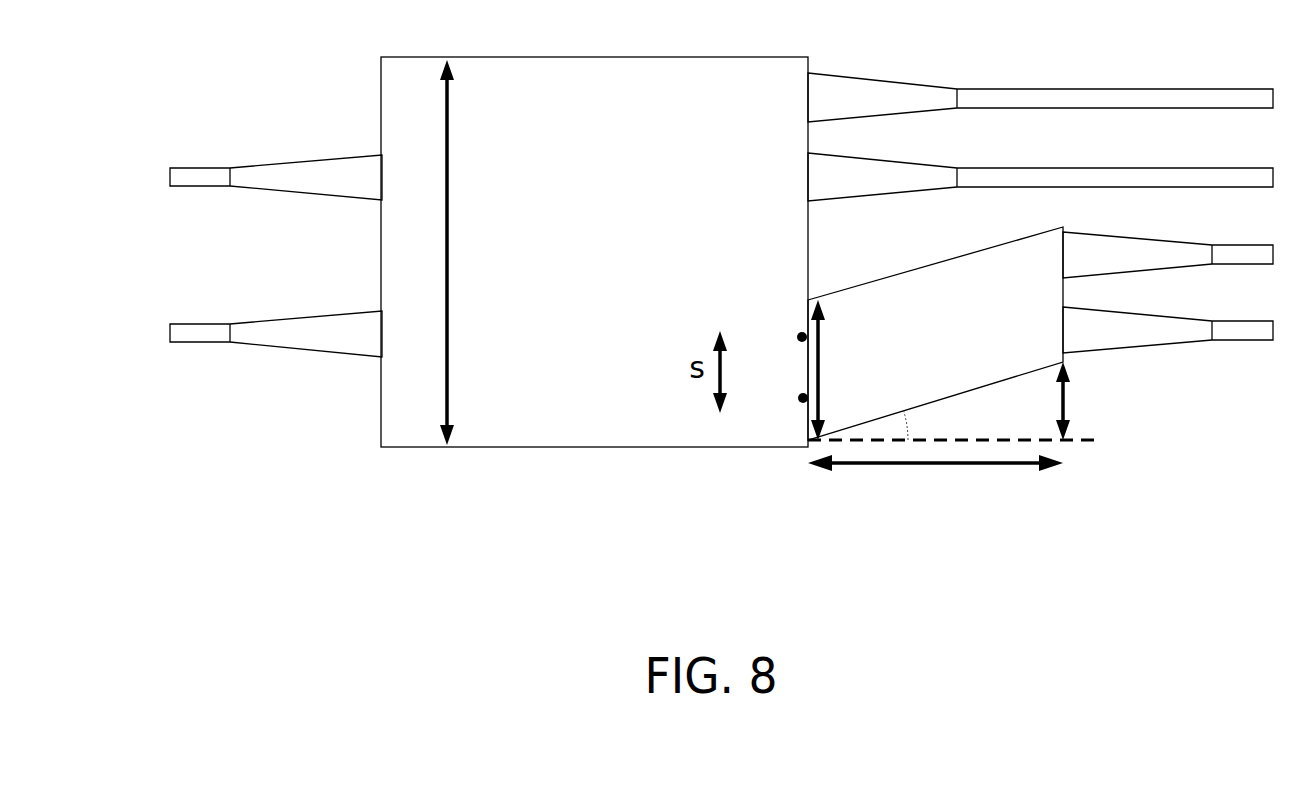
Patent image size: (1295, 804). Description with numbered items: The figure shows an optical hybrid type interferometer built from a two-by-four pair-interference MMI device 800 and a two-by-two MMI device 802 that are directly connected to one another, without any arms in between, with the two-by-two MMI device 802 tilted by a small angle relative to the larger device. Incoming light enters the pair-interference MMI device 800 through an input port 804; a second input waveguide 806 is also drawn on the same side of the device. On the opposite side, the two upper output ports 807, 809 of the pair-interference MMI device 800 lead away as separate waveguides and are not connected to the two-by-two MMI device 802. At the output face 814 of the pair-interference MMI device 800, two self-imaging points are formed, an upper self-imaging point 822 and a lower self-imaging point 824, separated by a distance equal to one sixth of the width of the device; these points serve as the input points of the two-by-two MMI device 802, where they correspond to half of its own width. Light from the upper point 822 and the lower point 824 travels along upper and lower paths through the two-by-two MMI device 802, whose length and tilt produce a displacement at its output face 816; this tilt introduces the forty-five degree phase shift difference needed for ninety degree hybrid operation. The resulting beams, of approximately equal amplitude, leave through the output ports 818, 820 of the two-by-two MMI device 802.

The 2×4 pair-interference MMI device 800 is at (594, 228).
The 2×2 MMI device 802 is at (959, 367).
The input port 804 is at (276, 158).
The second input waveguide 806 is at (276, 315).
The output port 807 is at (1040, 74).
The output port 809 is at (1040, 166).
The output face 814 is at (812, 482).
The output face 816 is at (1064, 482).
The output port 818 is at (1168, 247).
The output port 820 is at (1168, 350).
The upper self-imaging point 822 is at (772, 339).
The lower self-imaging point 824 is at (773, 402).